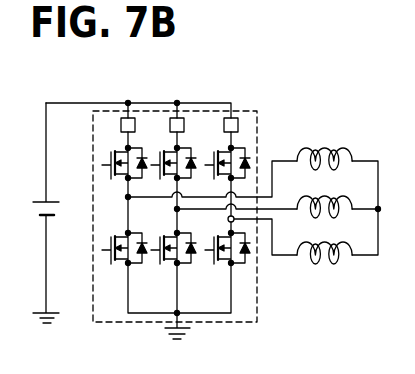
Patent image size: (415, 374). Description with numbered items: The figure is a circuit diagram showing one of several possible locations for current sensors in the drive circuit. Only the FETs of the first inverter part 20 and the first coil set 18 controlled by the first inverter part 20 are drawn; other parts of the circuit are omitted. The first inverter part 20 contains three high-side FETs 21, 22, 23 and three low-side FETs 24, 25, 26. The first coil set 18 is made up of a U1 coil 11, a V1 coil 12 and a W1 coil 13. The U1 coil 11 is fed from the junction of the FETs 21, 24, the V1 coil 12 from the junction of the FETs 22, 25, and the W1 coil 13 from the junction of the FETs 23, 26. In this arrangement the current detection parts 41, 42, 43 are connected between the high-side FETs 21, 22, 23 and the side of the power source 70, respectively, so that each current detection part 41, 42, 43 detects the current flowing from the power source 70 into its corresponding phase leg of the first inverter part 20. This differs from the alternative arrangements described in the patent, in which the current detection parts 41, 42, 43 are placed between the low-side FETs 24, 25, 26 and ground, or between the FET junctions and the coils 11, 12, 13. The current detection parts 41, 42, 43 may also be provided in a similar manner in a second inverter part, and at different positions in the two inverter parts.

The power source 70 is at (42, 201).
The first inverter part 20 is at (257, 110).
The high-side FET 21 is at (122, 146).
The high-side FET 22 is at (172, 146).
The high-side FET 23 is at (225, 146).
The current detection part 41 is at (122, 116).
The current detection part 42 is at (171, 116).
The current detection part 43 is at (225, 116).
The low-side FET 24 is at (139, 233).
The low-side FET 25 is at (186, 266).
The low-side FET 26 is at (247, 264).
The U1 coil 11 is at (341, 152).
The V1 coil 12 is at (343, 197).
The W1 coil 13 is at (343, 243).
The first coil set 18 is at (339, 227).